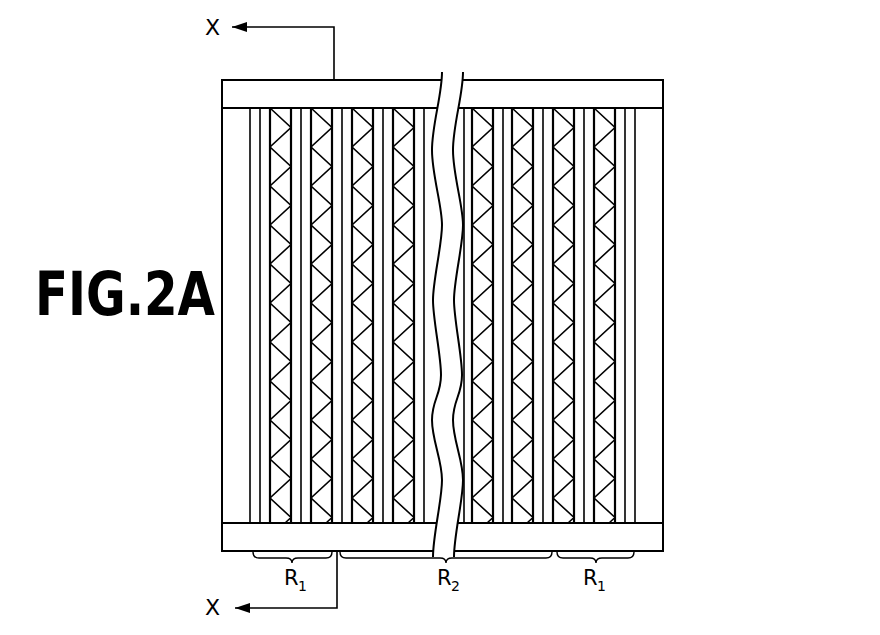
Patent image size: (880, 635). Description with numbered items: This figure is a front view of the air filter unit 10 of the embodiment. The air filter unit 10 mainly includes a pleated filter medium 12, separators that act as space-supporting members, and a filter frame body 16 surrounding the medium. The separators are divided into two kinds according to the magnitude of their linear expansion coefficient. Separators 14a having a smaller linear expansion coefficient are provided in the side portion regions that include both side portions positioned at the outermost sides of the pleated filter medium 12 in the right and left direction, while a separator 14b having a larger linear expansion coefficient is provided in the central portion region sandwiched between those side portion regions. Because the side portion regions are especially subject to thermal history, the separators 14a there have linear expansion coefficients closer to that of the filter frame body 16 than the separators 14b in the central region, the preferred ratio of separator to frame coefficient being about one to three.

The air filter unit 10 is at (701, 237).
The pleated filter medium 12 is at (255, 505).
The separators having a smaller linear expansion coefficient 14a is at (277, 108).
The separator having a larger linear expansion coefficient 14b is at (400, 108).
The filter frame body 16 is at (650, 321).